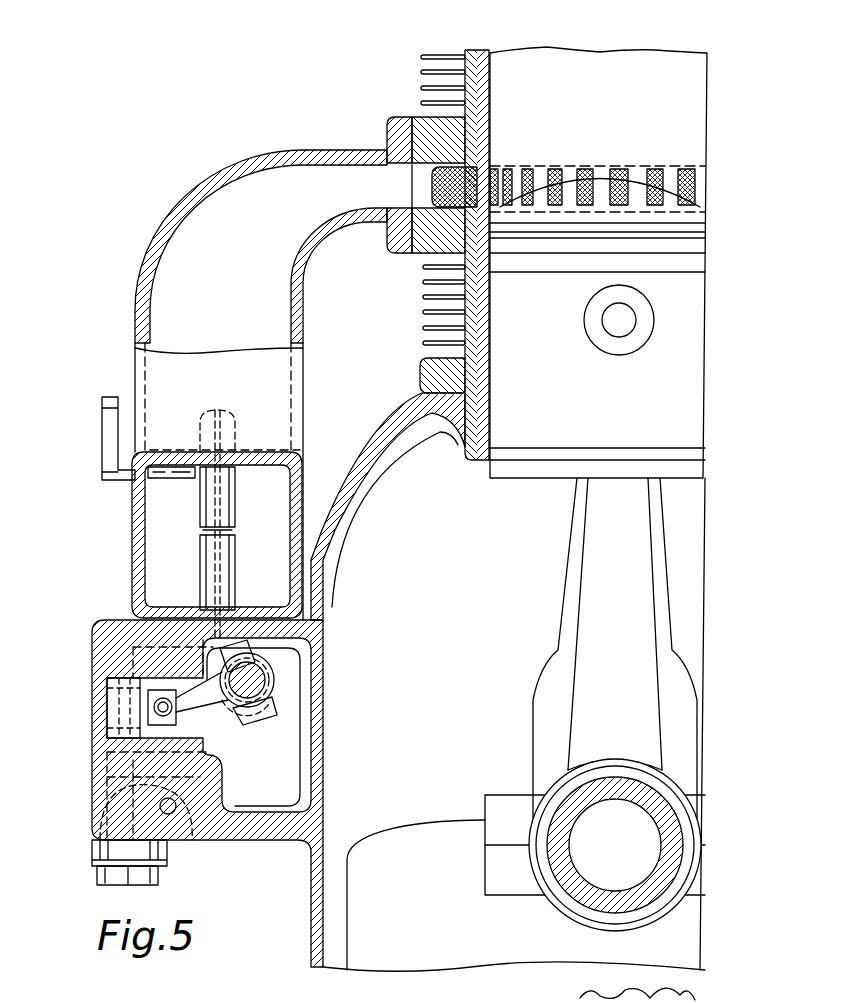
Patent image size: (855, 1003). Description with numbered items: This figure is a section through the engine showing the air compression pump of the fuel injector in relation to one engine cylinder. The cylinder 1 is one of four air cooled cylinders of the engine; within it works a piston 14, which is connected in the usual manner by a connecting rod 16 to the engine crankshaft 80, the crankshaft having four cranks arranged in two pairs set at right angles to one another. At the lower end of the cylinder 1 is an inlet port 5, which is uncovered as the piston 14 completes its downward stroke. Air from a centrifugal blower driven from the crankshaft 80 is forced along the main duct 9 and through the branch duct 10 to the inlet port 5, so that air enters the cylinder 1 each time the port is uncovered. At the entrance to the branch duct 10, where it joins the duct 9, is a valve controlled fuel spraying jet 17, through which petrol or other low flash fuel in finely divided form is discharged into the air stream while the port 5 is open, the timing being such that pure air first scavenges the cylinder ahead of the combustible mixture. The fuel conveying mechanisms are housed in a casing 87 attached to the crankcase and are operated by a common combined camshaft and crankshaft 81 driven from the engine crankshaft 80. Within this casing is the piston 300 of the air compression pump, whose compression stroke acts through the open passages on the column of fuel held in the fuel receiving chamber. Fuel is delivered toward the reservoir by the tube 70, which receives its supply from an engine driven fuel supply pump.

The cylinder 1 is at (433, 60).
The inlet port 5 is at (530, 170).
The branch duct 10 is at (261, 385).
The duct 9 is at (202, 507).
The fuel spraying jet 17 is at (234, 434).
The piston 14 is at (523, 427).
The connecting rod 16 is at (593, 596).
The crankshaft 80 is at (590, 868).
The combined camshaft and crankshaft 81 is at (253, 727).
The piston of the air compression pump 300 is at (117, 732).
The casing 87 is at (104, 757).
The tube 70 is at (172, 814).